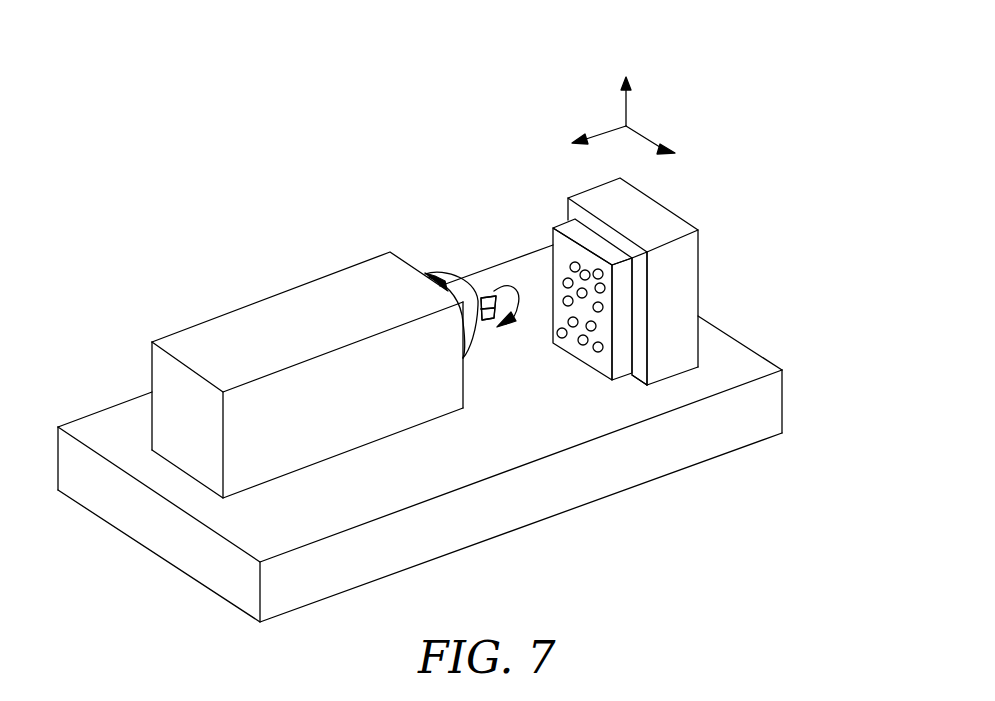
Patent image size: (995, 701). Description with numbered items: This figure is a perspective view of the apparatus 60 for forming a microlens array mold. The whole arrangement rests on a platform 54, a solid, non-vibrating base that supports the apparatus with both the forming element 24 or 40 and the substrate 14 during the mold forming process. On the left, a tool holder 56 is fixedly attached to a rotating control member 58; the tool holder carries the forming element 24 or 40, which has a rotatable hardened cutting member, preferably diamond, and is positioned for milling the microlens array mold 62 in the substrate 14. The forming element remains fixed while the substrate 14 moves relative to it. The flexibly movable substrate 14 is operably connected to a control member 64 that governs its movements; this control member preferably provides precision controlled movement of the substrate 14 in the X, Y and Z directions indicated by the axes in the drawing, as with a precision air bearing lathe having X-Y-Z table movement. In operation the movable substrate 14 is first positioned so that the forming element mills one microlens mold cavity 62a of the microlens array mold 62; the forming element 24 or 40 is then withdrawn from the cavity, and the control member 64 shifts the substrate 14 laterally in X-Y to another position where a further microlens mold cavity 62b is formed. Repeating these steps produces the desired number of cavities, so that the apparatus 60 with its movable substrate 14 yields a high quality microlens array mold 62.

The substrate 14 is at (623, 305).
The forming element 24 is at (482, 296).
The forming element 40 is at (482, 296).
The platform 54 is at (550, 485).
The tool holder 56 is at (452, 284).
The rotating control member 58 is at (257, 312).
The apparatus 60 is at (303, 84).
The microlens array mold 62 is at (565, 345).
The microlens mold cavity 62a is at (602, 307).
The microlens mold cavity 62b is at (582, 344).
The control member 64 is at (665, 218).